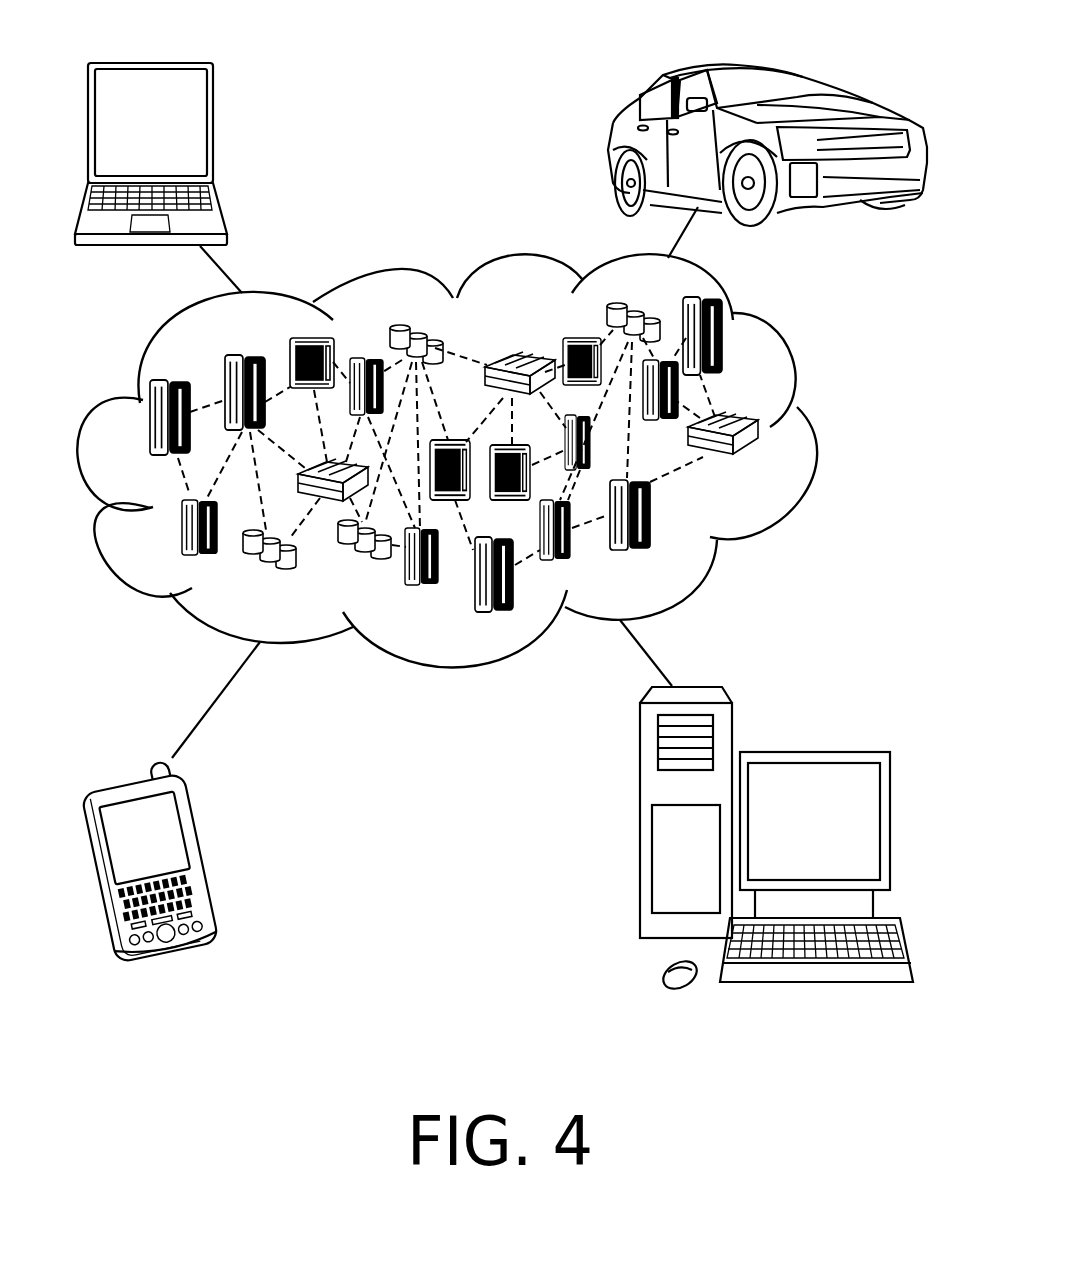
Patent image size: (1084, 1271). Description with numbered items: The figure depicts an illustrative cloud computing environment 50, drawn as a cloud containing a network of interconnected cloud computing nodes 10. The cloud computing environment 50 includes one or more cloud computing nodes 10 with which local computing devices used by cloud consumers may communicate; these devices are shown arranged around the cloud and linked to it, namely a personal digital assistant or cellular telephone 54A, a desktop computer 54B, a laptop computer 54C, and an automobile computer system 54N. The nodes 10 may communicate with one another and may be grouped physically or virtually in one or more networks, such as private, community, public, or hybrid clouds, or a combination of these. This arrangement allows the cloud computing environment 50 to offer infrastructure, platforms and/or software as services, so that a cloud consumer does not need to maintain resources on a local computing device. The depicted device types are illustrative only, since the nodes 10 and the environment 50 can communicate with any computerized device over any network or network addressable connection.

The cloud computing node 10 is at (766, 467).
The cloud computing environment 50 is at (473, 460).
The personal digital assistant (PDA) or cellular telephone 54A is at (206, 856).
The desktop computer 54B is at (815, 752).
The laptop computer 54C is at (215, 130).
The automobile computer system 54N is at (614, 150).